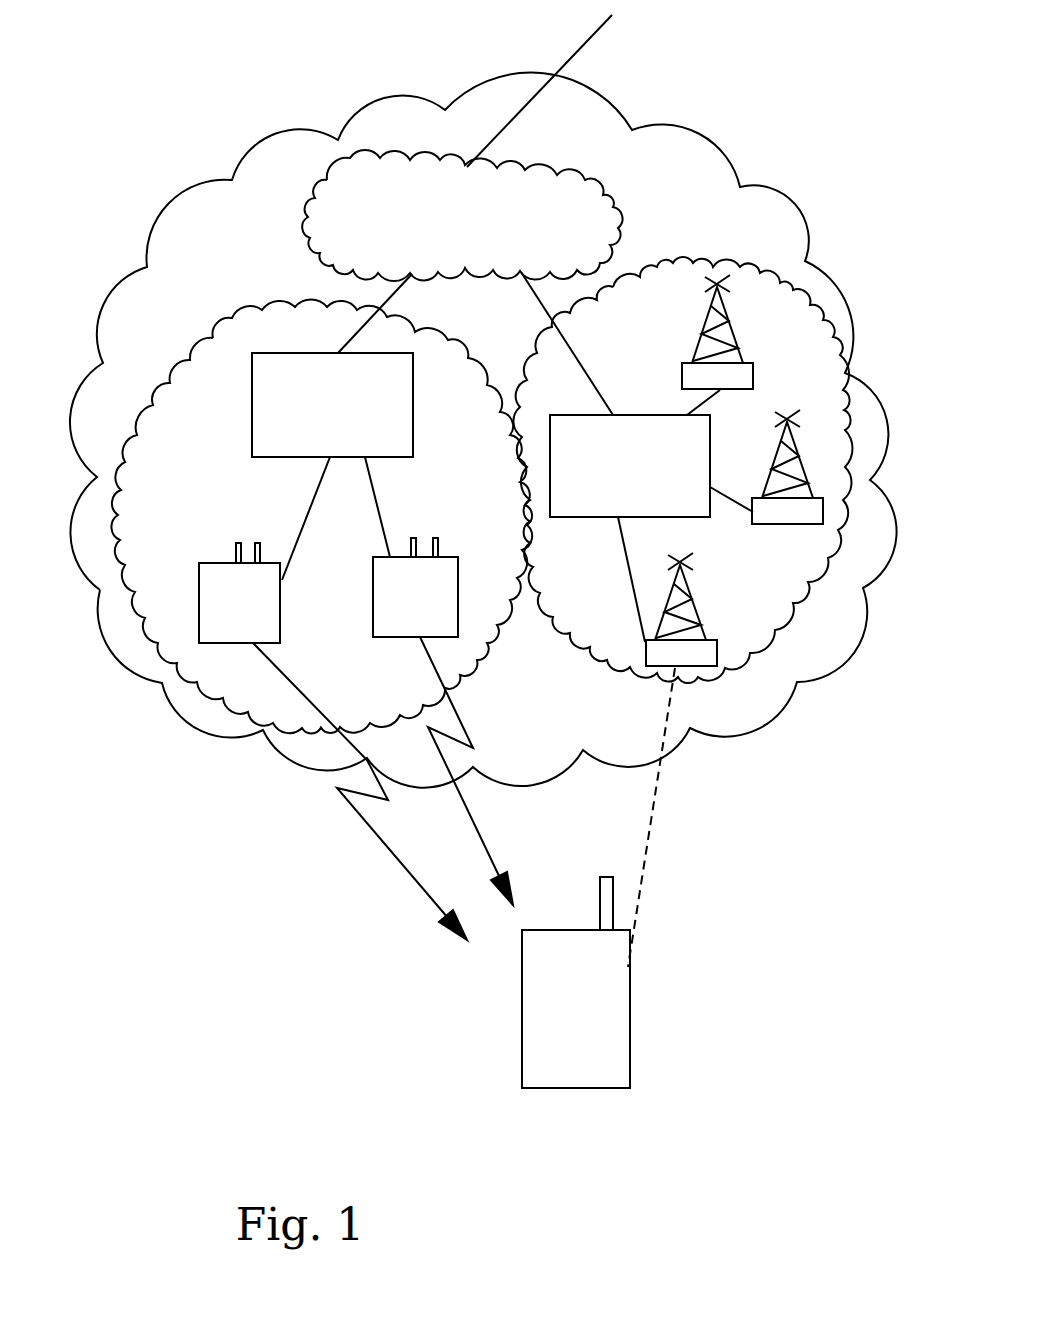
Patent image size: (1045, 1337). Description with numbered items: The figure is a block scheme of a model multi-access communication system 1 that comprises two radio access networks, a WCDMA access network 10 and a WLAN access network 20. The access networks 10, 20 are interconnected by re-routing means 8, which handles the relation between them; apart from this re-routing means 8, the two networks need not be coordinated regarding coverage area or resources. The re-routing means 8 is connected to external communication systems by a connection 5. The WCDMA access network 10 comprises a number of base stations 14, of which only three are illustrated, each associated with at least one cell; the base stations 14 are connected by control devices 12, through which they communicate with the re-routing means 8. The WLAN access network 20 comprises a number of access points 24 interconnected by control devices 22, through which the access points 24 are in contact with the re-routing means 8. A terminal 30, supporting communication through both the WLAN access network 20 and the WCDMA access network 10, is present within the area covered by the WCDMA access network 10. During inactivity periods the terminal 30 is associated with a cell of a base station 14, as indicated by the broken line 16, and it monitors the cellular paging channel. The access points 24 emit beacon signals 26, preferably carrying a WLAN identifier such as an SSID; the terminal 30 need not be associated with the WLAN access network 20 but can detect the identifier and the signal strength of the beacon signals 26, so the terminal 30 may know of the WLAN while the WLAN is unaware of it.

The multi-access communication system 1 is at (790, 896).
The connection 5 is at (595, 32).
The re-routing means 8 is at (308, 227).
The WCDMA access network 10 is at (595, 635).
The control devices 12 is at (648, 430).
The base stations 14 is at (737, 373).
The broken line 16 is at (645, 873).
The WLAN access network 20 is at (478, 643).
The control devices 22 is at (398, 442).
The access points 24 is at (273, 618).
The beacon signals 26 is at (377, 840).
The terminal 30 is at (608, 1072).